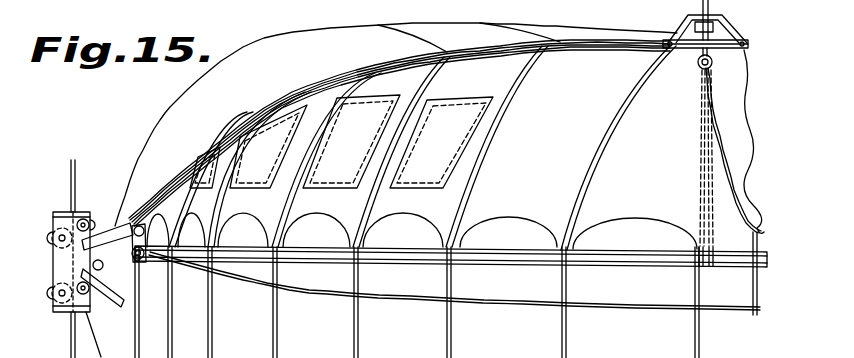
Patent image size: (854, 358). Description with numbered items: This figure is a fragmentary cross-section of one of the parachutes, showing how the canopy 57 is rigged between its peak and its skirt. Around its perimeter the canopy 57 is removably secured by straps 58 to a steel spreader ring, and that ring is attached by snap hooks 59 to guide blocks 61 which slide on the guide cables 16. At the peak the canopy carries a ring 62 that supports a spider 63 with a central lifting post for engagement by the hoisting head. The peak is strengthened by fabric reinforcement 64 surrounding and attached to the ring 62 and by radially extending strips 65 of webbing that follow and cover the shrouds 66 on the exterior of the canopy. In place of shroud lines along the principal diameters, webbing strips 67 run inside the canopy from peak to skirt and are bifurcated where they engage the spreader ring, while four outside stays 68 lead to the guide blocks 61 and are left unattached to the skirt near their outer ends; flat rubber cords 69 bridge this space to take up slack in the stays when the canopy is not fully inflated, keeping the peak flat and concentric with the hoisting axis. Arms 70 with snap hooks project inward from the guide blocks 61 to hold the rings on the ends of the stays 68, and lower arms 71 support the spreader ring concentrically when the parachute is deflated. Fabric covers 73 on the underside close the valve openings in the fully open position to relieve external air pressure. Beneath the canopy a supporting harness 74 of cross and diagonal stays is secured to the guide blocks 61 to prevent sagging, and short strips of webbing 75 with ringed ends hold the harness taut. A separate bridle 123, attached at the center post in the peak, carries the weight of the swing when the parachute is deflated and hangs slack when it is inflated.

The guide cables 16 is at (83, 152).
The canopy 57 is at (197, 97).
The straps 58 is at (563, 258).
The snap hooks 59 is at (90, 256).
The guide blocks 61 is at (70, 220).
The ring 62 is at (747, 53).
The spider 63 is at (727, 27).
The fabric reinforcement 64 is at (478, 56).
The radially extending strips 65 is at (392, 36).
The shrouds 66 is at (274, 327).
The webbing strips 67 is at (559, 55).
The outside stays 68 is at (575, 41).
The flat rubber cords 69 is at (333, 80).
The arms 70 is at (130, 230).
The lower arms 71 is at (110, 301).
The fabric covers 73 is at (432, 162).
The supporting harness 74 is at (350, 294).
The short strips of webbing 75 is at (140, 260).
The bridle 123 is at (747, 290).